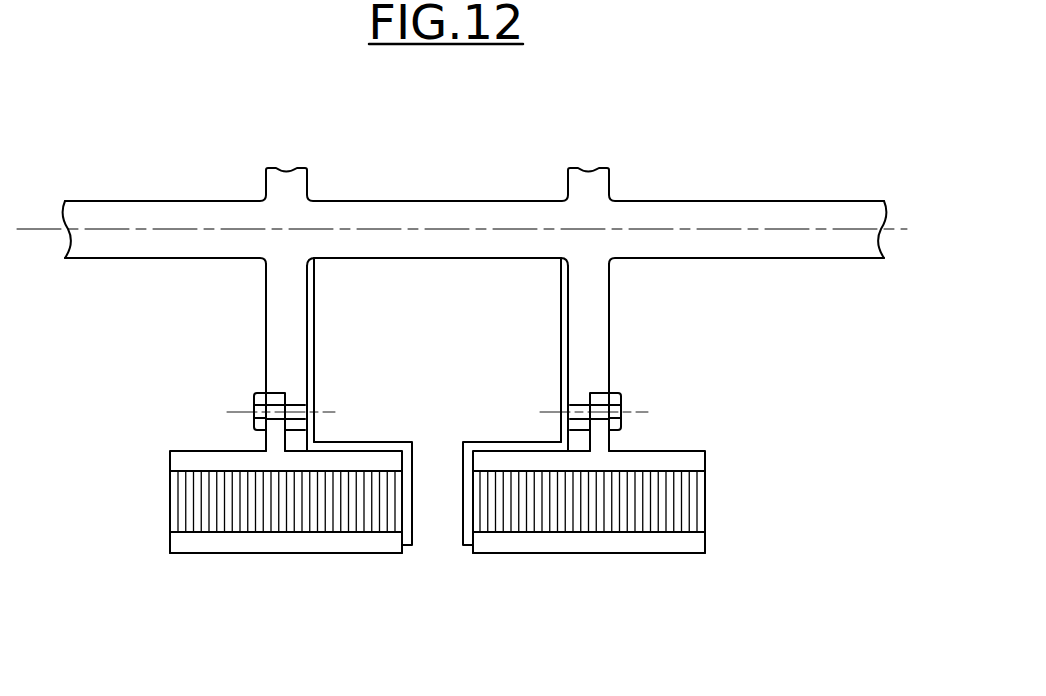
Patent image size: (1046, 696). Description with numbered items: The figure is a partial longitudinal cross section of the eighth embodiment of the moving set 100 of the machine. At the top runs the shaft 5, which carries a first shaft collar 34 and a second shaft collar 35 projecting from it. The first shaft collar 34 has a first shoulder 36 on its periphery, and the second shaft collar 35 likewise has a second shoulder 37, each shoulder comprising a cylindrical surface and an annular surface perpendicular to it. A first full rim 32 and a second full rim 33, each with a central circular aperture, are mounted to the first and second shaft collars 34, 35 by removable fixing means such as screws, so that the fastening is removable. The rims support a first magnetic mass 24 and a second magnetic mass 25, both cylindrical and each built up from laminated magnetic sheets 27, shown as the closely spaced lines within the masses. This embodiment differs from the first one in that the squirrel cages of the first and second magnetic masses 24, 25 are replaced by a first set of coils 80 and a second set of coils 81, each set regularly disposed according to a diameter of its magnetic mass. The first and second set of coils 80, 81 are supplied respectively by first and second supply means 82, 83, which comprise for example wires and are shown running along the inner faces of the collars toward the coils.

The shaft 5 is at (150, 213).
The moving set 100 is at (667, 182).
The first shaft collar 34 is at (326, 301).
The second shaft collar 35 is at (550, 301).
The first supply means 82 is at (314, 337).
The second supply means 83 is at (561, 337).
The first magnetic mass 24 is at (390, 430).
The second magnetic mass 25 is at (484, 430).
The first full rim 32 is at (206, 450).
The second full rim 33 is at (668, 450).
The first shoulder 36 is at (263, 392).
The second shoulder 37 is at (612, 392).
The laminated magnetic sheets 27 is at (326, 522).
The first set of coils 80 is at (258, 546).
The second set of coils 81 is at (619, 546).